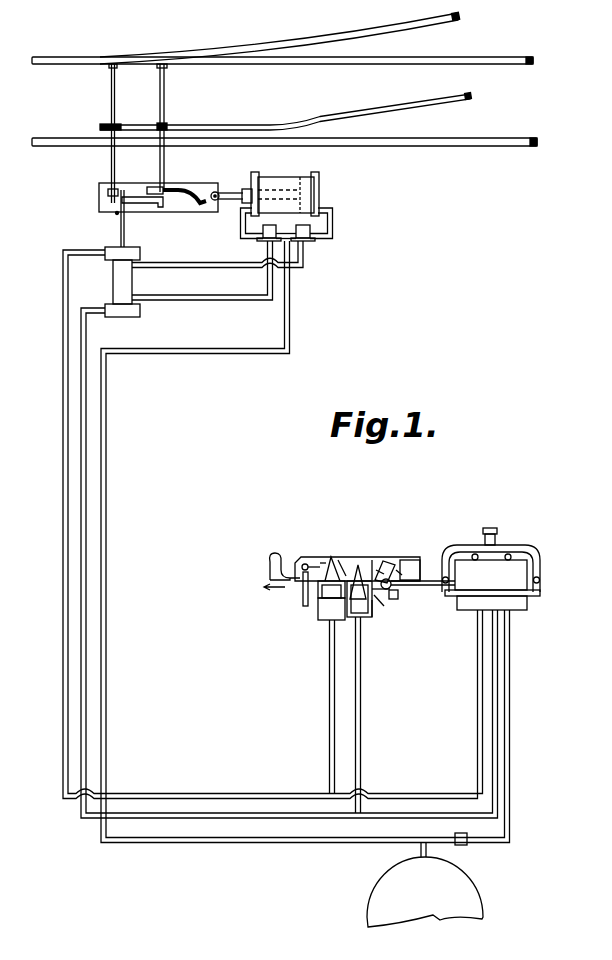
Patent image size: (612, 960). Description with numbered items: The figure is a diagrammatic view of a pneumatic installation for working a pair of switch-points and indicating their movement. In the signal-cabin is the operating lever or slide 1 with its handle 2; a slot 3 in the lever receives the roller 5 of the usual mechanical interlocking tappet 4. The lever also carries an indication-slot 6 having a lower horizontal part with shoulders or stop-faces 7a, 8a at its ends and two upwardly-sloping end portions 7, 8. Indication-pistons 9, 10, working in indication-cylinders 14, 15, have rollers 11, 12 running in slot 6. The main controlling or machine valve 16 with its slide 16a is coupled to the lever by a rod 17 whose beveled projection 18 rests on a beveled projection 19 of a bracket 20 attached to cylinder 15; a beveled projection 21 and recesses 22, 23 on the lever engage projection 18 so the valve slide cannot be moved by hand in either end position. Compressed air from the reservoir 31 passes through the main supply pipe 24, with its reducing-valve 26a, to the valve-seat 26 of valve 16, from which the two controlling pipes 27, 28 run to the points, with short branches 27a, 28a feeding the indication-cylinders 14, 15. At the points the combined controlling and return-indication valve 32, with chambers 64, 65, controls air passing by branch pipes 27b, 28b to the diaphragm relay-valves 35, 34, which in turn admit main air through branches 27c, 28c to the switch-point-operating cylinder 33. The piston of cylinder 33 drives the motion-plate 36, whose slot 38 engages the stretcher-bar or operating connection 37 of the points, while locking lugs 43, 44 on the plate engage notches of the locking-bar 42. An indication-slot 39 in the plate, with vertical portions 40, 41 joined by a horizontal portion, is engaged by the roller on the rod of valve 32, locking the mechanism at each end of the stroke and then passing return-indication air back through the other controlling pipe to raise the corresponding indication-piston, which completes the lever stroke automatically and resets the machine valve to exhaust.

The operating lever or slide 1 is at (412, 557).
The handle 2 is at (273, 553).
The slot 3 is at (305, 555).
The mechanical interlocking tappet 4 is at (303, 590).
The roller 5 is at (303, 564).
The indication-slot 6 is at (358, 564).
The upwardly-sloping end portion 7 is at (332, 557).
The shoulder or stop-face 7a is at (342, 560).
The upwardly-sloping end portion 8 is at (386, 561).
The shoulder or stop-face 8a is at (379, 557).
The indication-piston 9 is at (331, 591).
The indication-piston 10 is at (359, 599).
The roller 11 is at (323, 562).
The roller 12 is at (373, 560).
The indication-cylinder 14 is at (331, 609).
The indication-cylinder 15 is at (362, 617).
The main controlling or machine valve 16 is at (541, 582).
The slide of the machine valve 16a is at (524, 575).
The rod 17 is at (430, 586).
The projection 18 is at (398, 593).
The beveled projection 19 is at (386, 599).
The bracket 20 is at (380, 605).
The beveled projection 21 is at (399, 558).
The recess 22 is at (387, 575).
The recess 23 is at (410, 570).
The main compressed-air-supply pipe 24 is at (290, 290).
The valve-seat 26 is at (492, 602).
The reducing-valve 26a is at (463, 845).
The controlling or operating pipe 27 is at (63, 337).
The branch 27a is at (329, 692).
The branch pipe 27b is at (217, 254).
The branch pipe 27c is at (333, 219).
The controlling or operating pipe 28 is at (86, 333).
The branch 28a is at (361, 690).
The branch pipe 28b is at (202, 281).
The branch pipe 28c is at (241, 231).
The compressed-air reservoir 31 is at (425, 884).
The combined controlling and return-indication valve 32 is at (113, 282).
The switch-point-operating cylinder or motor 33 is at (280, 182).
The diaphragm relay-valve 34 is at (263, 241).
The diaphragm relay-valve 35 is at (311, 241).
The motion-plate 36 is at (214, 192).
The stretcher-bar or operating connection 37 is at (165, 97).
The slot 38 is at (178, 189).
The indication-slot 39 is at (145, 204).
The vertical portion 40 is at (118, 190).
The vertical portion 41 is at (118, 213).
The locking-bar 42 is at (110, 97).
The locking projection or lug 43 is at (99, 190).
The locking projection or lug 44 is at (155, 187).
The chamber 64 is at (140, 252).
The chamber 65 is at (140, 312).